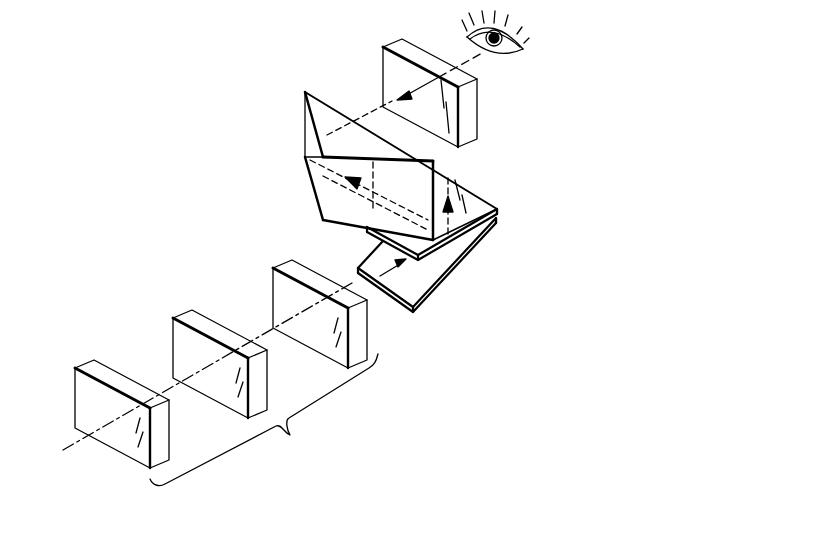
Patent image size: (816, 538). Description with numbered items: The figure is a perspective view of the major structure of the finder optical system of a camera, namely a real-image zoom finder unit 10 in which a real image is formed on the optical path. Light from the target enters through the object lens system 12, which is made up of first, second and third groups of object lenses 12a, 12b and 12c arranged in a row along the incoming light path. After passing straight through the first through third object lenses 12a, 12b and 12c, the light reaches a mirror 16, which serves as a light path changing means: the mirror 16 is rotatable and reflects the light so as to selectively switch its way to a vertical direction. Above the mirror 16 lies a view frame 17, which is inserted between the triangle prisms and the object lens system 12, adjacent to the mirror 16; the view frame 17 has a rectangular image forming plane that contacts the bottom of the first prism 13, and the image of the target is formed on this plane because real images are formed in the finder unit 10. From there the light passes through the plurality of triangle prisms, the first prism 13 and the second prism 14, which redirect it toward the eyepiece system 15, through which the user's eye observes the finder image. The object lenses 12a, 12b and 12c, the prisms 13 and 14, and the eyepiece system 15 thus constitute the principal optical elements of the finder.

The finder unit 10 is at (252, 76).
The object lens system 12 is at (212, 355).
The first group of object lenses 12a is at (97, 373).
The second group of object lenses 12b is at (197, 320).
The third group of object lenses 12c is at (293, 268).
The first prism 13 is at (468, 200).
The second prism 14 is at (323, 117).
The eyepiece system 15 is at (400, 42).
The mirror 16 is at (442, 262).
The view frame 17 is at (497, 222).